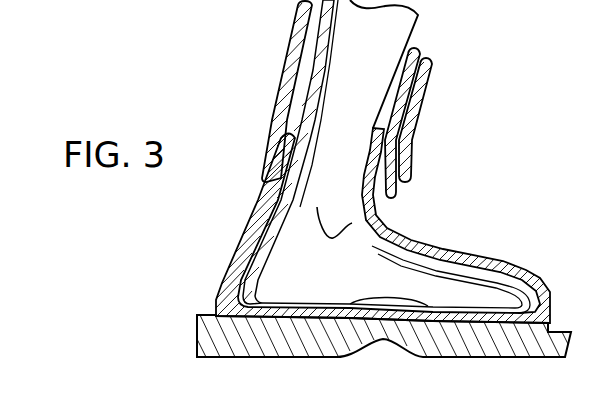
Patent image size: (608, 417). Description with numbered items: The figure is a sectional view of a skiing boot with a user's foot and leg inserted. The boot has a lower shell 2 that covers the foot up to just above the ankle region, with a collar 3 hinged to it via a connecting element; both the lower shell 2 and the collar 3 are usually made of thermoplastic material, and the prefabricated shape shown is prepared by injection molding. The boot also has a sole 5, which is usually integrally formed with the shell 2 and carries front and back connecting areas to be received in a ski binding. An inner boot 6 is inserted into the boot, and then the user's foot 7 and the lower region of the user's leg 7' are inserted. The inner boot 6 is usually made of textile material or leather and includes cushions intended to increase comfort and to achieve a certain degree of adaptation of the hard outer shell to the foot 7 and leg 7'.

The lower shell 2 is at (458, 258).
The collar 3 is at (415, 105).
The sole 5 is at (252, 91).
The inner boot 6 is at (418, 57).
The foot 7 is at (396, 326).
The leg 7' is at (298, 152).